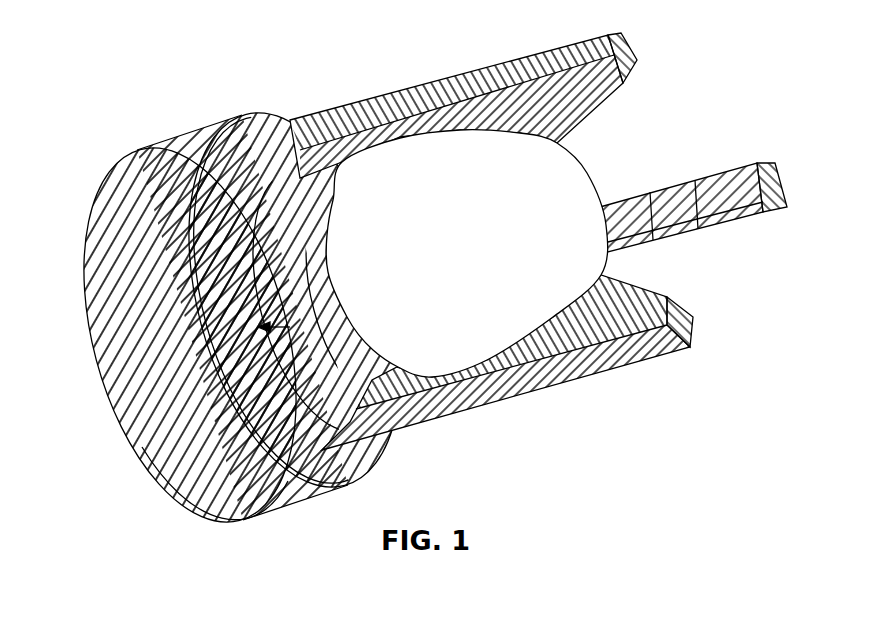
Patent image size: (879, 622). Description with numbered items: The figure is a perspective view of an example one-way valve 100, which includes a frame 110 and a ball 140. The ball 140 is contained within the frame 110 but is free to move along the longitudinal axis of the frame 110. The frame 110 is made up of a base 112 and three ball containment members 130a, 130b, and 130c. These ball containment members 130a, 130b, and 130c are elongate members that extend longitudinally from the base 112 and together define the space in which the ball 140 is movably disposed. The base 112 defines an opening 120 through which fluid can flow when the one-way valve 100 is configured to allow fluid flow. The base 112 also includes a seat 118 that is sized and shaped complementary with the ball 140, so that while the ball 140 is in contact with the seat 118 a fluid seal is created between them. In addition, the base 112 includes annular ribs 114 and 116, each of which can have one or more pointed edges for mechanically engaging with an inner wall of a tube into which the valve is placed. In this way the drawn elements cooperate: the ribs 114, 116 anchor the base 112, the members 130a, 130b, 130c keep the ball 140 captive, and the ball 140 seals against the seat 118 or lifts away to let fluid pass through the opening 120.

The one-way valve 100 is at (90, 76).
The frame 110 is at (196, 125).
The base 112 is at (293, 501).
The annular rib 114 is at (241, 520).
The annular rib 116 is at (262, 113).
The seat 118 is at (333, 172).
The opening 120 is at (403, 398).
The ball containment member 130a is at (583, 40).
The ball containment member 130b is at (668, 348).
The ball containment member 130c is at (752, 212).
The ball 140 is at (585, 172).